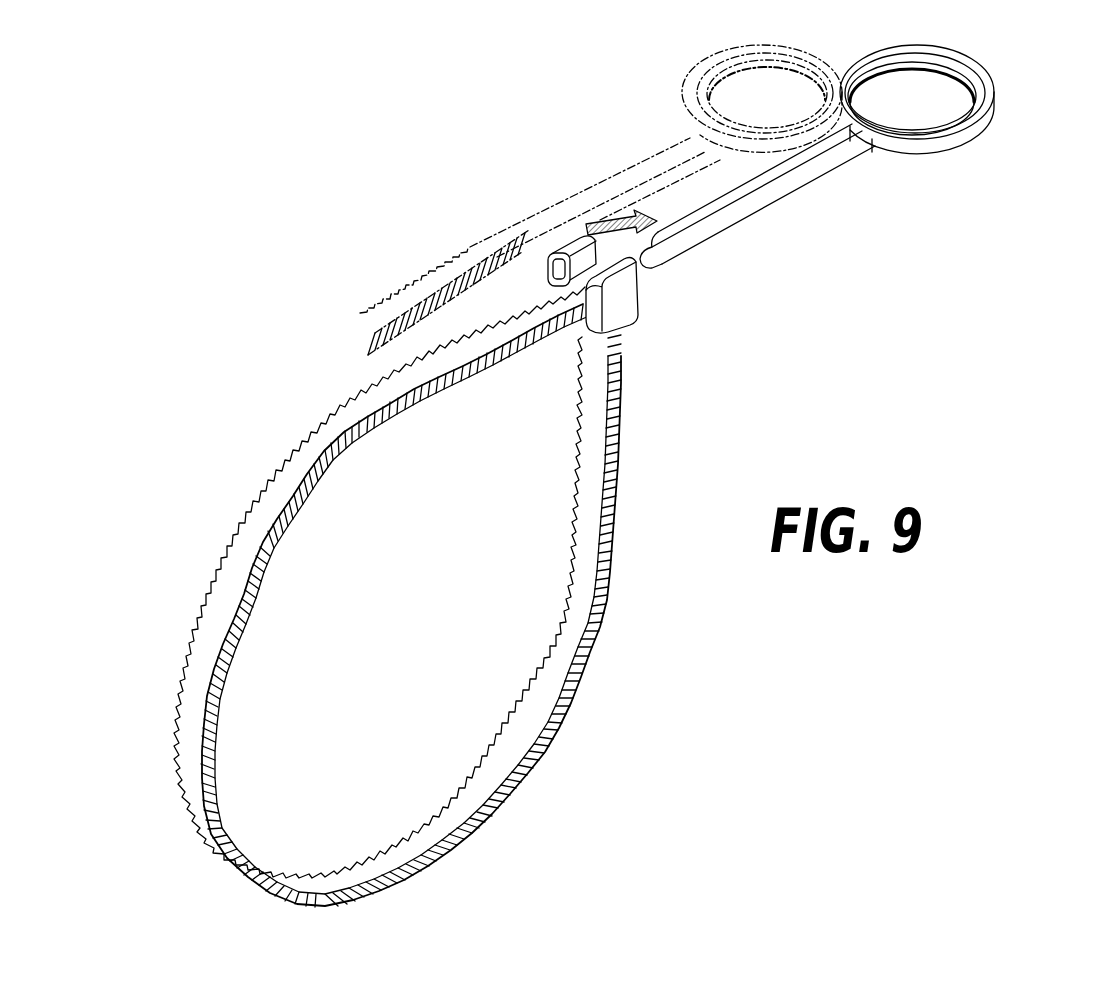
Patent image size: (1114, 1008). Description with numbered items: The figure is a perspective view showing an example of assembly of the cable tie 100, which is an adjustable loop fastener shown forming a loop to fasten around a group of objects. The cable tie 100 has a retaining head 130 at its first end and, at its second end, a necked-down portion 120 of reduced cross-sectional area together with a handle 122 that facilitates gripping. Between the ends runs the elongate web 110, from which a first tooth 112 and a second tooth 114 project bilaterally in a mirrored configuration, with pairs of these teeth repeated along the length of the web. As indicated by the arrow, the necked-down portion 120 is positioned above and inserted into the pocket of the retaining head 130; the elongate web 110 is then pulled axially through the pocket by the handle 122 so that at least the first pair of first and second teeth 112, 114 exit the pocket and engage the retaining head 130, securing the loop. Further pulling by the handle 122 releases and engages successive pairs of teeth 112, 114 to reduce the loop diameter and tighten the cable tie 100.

The cable tie 100 is at (352, 210).
The elongate web 110 is at (592, 549).
The first tooth 112 is at (640, 283).
The second tooth 114 is at (586, 245).
The necked-down portion 120 is at (753, 187).
The handle 122 is at (985, 78).
The retaining head 130 is at (625, 297).